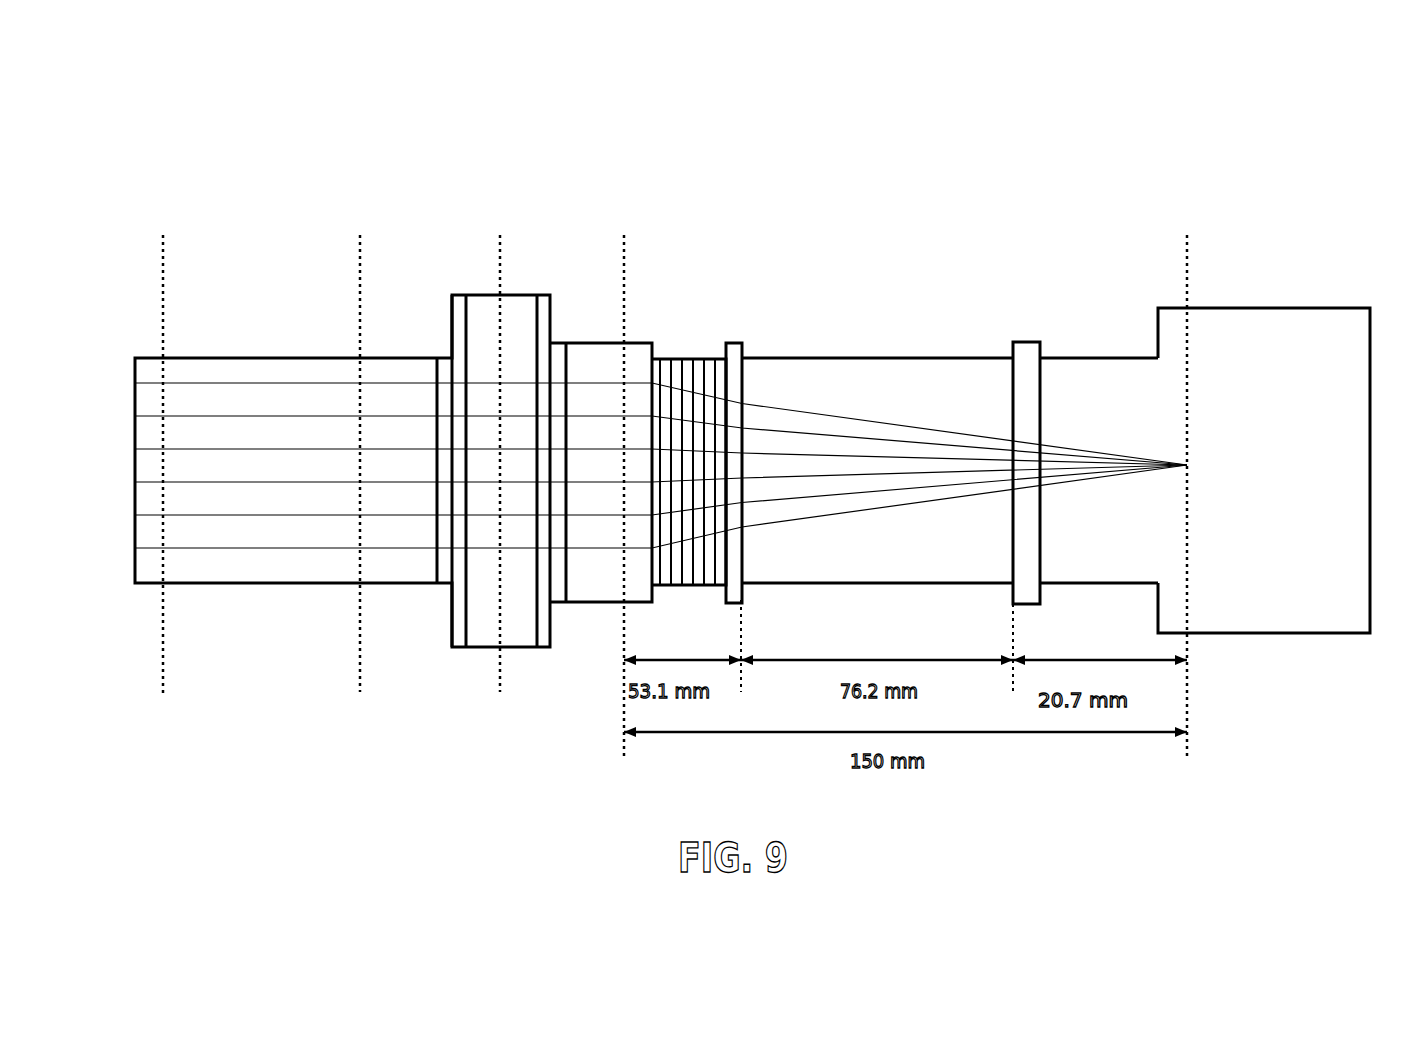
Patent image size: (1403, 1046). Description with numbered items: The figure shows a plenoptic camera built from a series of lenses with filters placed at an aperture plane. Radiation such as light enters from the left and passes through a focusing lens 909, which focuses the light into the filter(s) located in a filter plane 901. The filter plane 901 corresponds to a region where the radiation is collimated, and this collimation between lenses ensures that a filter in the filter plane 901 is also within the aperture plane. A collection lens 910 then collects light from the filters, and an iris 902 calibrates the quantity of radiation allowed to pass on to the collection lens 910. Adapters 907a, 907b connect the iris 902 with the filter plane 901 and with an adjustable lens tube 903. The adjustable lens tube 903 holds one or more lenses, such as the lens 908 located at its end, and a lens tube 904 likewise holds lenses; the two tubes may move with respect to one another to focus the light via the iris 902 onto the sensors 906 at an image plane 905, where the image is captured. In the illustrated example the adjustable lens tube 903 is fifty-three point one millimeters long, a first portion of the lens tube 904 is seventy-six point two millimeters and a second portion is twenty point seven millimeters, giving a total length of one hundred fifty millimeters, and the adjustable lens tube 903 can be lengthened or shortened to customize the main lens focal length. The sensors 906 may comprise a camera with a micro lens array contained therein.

The filter plane 901 is at (261, 465).
The iris 902 is at (522, 285).
The adjustable lens tube 903 is at (670, 352).
The lens tube 904 is at (1074, 431).
The image plane 905 is at (1262, 484).
The sensors 906 is at (1264, 470).
The adapter 907a is at (444, 292).
The adapter 907b is at (558, 330).
The lens 908 is at (645, 624).
The focusing lens 909 is at (658, 524).
The collection lens 910 is at (615, 506).